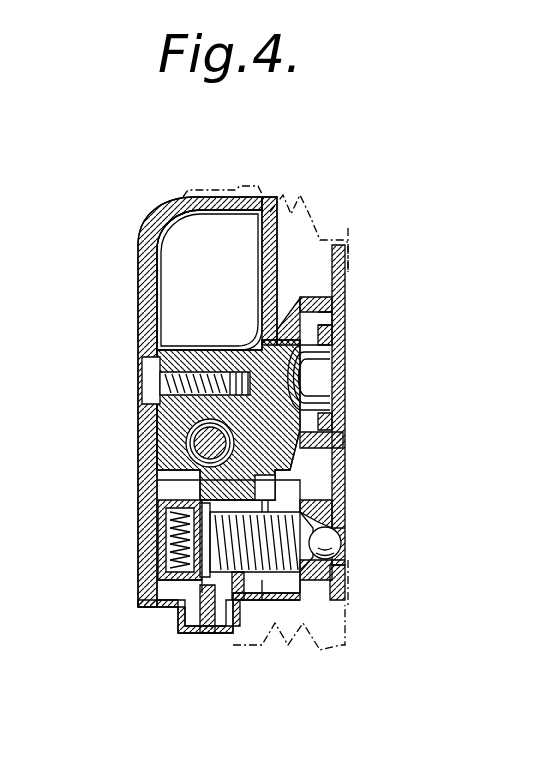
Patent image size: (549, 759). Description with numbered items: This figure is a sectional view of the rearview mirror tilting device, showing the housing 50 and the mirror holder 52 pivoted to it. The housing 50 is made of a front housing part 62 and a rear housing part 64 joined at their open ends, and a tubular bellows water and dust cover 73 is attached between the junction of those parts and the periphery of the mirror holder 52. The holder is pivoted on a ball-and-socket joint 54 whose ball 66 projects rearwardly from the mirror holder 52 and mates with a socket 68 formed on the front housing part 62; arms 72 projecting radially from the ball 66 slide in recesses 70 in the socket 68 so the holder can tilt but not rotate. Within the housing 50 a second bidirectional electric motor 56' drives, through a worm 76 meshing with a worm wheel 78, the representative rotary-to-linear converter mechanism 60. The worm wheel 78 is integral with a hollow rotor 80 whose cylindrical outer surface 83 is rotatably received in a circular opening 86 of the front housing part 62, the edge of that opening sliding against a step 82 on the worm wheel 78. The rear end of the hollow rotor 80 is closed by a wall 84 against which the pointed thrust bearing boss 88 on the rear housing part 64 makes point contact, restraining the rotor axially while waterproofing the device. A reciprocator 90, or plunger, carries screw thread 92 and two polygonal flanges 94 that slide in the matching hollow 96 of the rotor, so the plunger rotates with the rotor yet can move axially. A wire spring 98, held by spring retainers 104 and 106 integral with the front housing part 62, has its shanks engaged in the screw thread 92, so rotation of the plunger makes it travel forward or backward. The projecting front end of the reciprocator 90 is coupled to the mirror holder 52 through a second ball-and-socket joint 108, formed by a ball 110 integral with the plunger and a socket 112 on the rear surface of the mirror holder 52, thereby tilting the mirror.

The housing 50 is at (256, 436).
The mirror holder 52 is at (347, 305).
The ball-and-socket joint 54 is at (334, 324).
The second bidirectional electric motor 56' is at (195, 253).
The rotary-to-linear converter mechanism 60 is at (152, 473).
The front housing part 62 is at (270, 205).
The rear housing part 64 is at (140, 296).
The ball 66 is at (305, 385).
The socket 68 is at (305, 363).
The recesses 70 is at (337, 336).
The arms 72 is at (294, 314).
The water and dust cover 73 is at (305, 198).
The worm 76 is at (206, 447).
The worm wheel 78 is at (200, 618).
The hollow rotor 80 is at (170, 585).
The step 82 is at (240, 603).
The outer surface 83 is at (256, 479).
The wall 84 is at (172, 563).
The circular opening 86 is at (170, 488).
The thrust bearing boss 88 is at (160, 549).
The reciprocator 90 is at (323, 528).
The screw thread 92 is at (326, 546).
The flanges 94 is at (185, 580).
The hollow 96 is at (172, 521).
The wire spring 98 is at (270, 592).
The spring retainer 104 is at (256, 499).
The spring retainer 106 is at (262, 600).
The ball-and-socket joint 108 is at (315, 573).
The ball 110 is at (332, 556).
The socket 112 is at (338, 528).